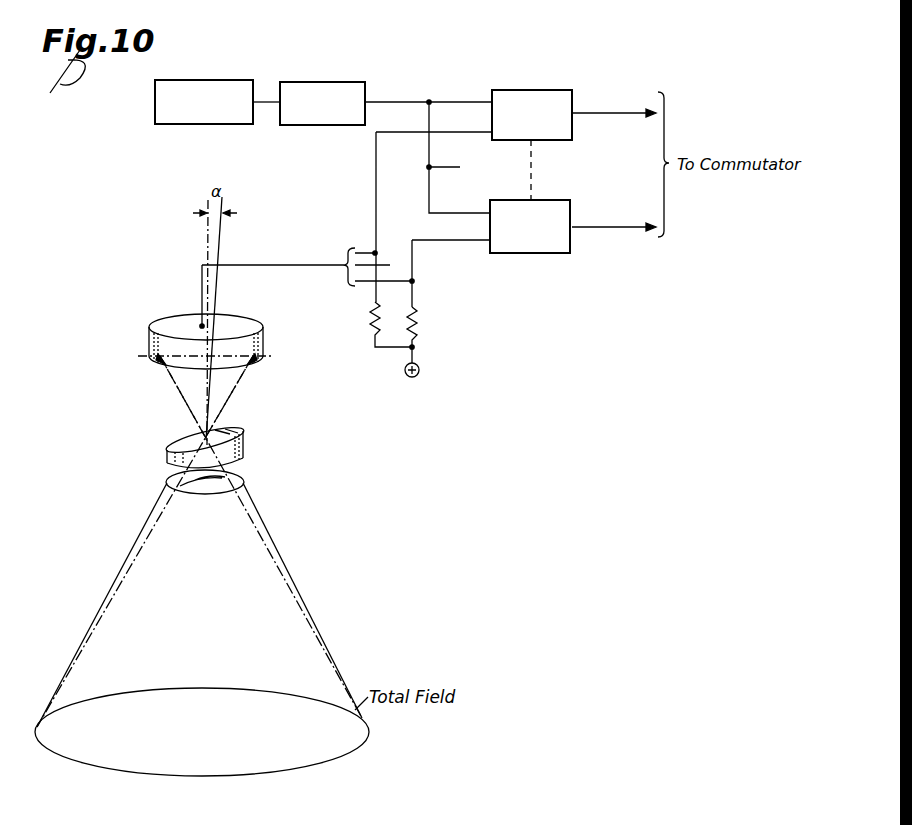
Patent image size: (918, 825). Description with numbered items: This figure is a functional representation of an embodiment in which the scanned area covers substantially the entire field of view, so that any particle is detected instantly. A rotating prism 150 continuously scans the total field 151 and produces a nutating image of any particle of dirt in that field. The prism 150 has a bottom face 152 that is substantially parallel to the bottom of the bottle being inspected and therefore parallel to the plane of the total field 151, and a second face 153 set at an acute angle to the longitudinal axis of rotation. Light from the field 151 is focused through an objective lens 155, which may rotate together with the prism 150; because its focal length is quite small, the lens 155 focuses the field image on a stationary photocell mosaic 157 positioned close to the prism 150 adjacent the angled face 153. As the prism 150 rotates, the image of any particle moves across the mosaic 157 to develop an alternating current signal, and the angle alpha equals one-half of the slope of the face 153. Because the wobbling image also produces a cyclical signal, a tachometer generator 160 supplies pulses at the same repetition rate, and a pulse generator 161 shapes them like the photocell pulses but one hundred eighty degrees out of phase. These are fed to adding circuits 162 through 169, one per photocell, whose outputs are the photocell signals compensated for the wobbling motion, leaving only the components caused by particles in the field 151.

The tachometer generator 160 is at (262, 70).
The pulse generator 161 is at (378, 72).
The adding circuit 162 is at (583, 86).
The adding circuit 169 is at (586, 196).
The photocell mosaic 157 is at (265, 343).
The second face 153 is at (180, 441).
The rotating prism 150 is at (167, 447).
The bottom face 152 is at (156, 458).
The objective lens 155 is at (246, 483).
The total field 151 is at (37, 727).